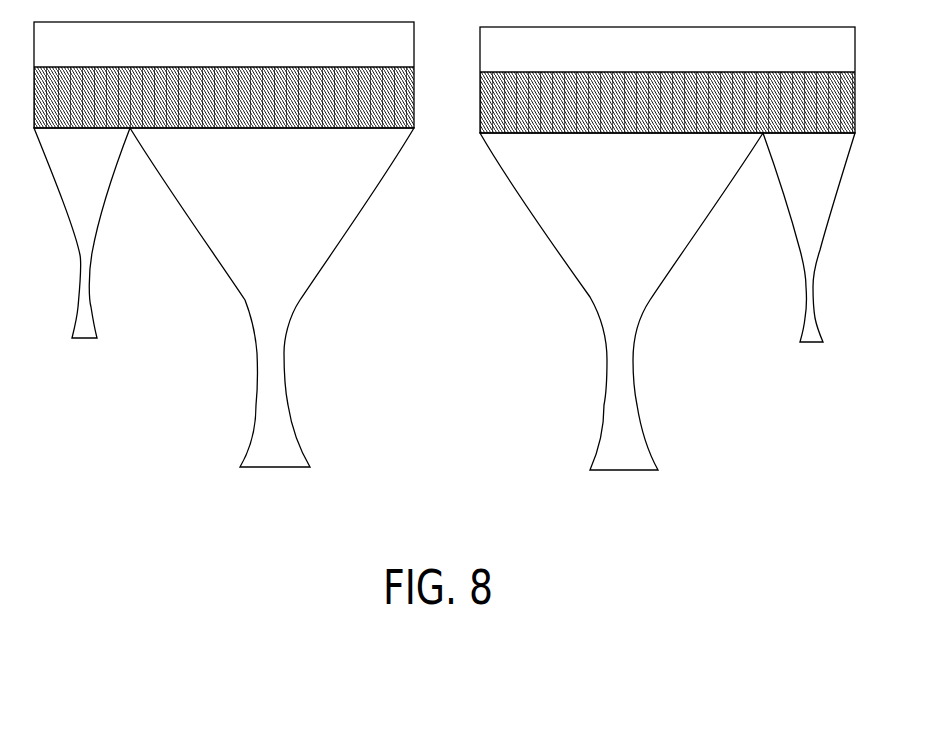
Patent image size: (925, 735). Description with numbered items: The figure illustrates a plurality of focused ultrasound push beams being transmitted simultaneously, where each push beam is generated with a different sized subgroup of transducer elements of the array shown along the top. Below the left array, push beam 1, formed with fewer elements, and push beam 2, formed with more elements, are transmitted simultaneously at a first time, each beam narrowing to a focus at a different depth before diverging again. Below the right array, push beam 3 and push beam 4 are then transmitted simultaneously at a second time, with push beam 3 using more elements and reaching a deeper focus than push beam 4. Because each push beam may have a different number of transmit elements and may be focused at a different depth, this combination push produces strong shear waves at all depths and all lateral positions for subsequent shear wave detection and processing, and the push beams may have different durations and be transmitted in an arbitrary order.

The push beam 1 is at (82, 245).
The push beam 2 is at (272, 309).
The push beam 3 is at (621, 315).
The push beam 4 is at (809, 250).